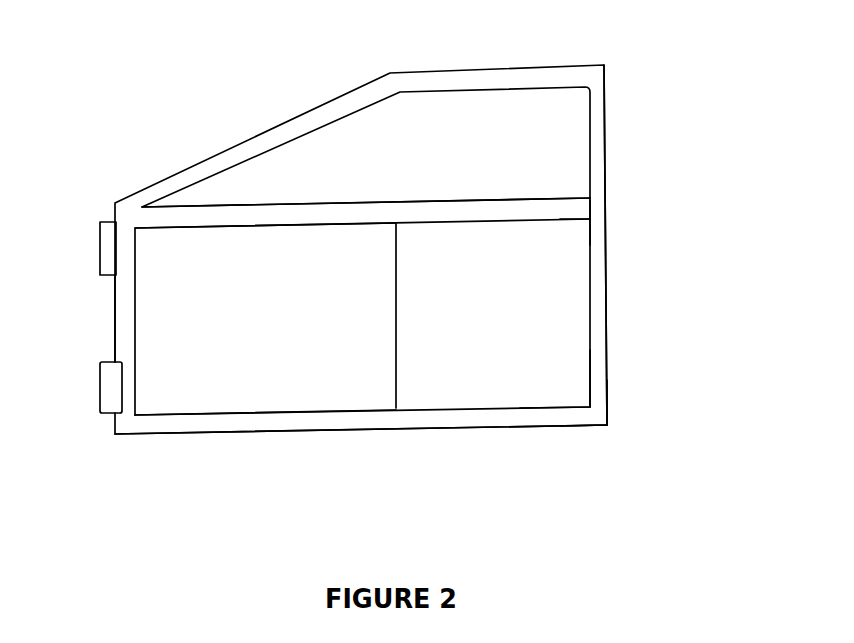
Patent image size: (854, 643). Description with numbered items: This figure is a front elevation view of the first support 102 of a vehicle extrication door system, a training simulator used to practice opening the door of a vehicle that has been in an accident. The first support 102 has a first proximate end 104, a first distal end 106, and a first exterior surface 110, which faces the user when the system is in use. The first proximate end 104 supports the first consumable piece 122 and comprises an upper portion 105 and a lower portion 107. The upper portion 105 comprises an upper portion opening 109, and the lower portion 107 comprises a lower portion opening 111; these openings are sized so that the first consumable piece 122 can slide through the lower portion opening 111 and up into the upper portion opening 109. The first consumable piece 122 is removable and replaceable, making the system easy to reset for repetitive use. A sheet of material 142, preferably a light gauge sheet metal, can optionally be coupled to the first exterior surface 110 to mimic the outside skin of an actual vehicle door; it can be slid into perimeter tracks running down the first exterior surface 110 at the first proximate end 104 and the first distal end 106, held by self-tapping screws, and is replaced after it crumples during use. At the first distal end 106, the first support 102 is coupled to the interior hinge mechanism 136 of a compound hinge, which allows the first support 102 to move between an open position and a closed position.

The first support 102 is at (416, 80).
The first proximate end 104 is at (657, 162).
The upper portion 105 is at (593, 206).
The first distal end 106 is at (128, 311).
The lower portion 107 is at (600, 413).
The upper portion opening 109 is at (598, 231).
The first exterior surface 110 is at (240, 422).
The lower portion opening 111 is at (598, 430).
The first consumable piece 122 is at (607, 295).
The interior hinge mechanism 136 is at (100, 253).
The sheet of material 142 is at (510, 383).